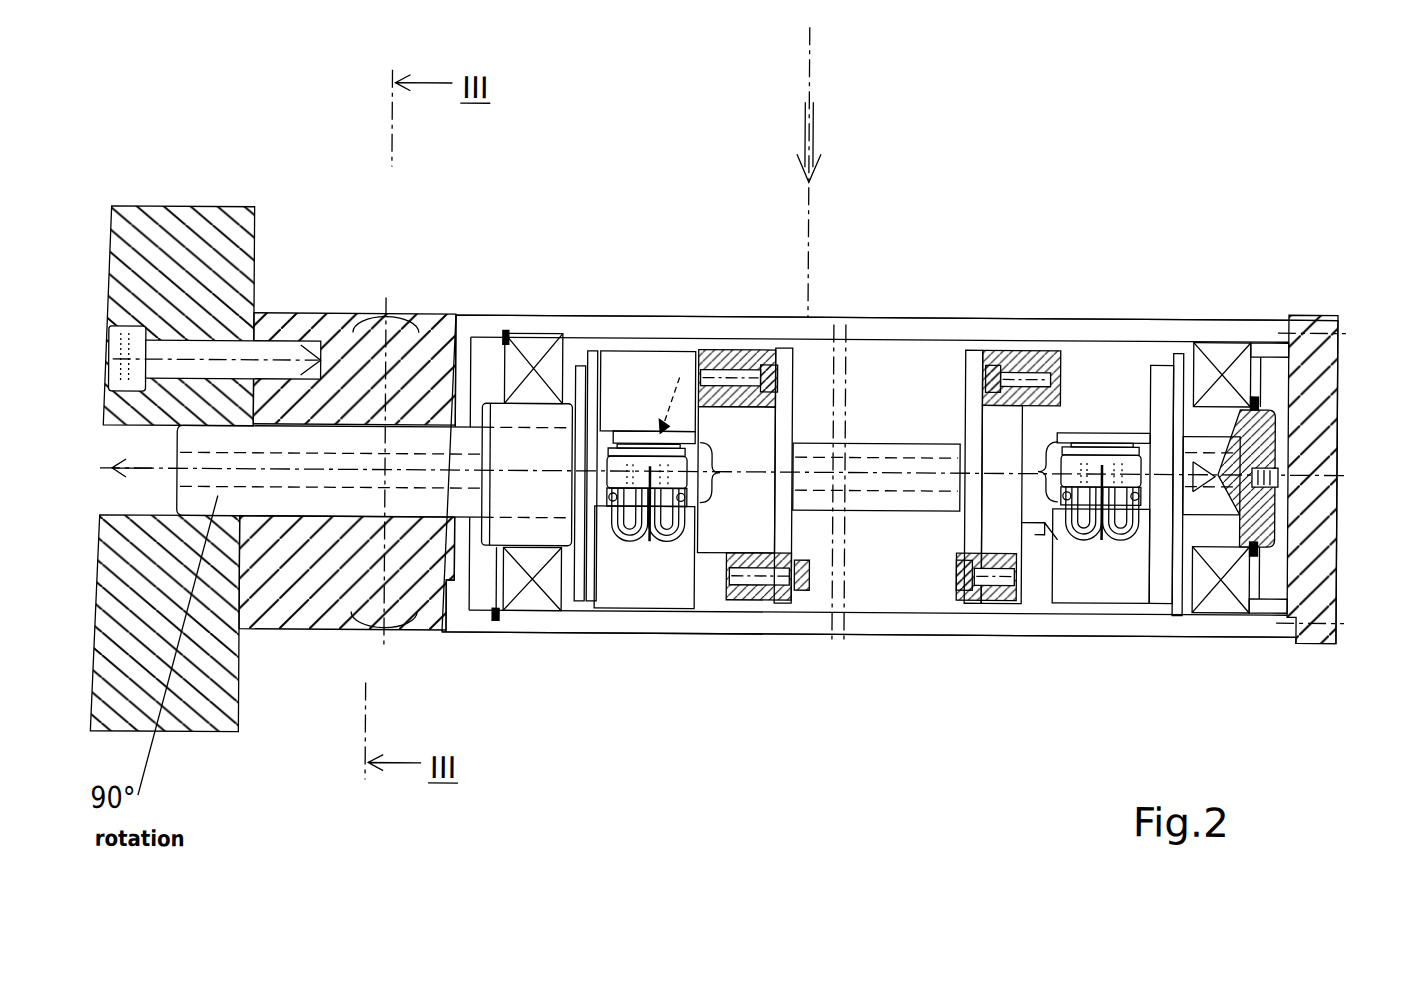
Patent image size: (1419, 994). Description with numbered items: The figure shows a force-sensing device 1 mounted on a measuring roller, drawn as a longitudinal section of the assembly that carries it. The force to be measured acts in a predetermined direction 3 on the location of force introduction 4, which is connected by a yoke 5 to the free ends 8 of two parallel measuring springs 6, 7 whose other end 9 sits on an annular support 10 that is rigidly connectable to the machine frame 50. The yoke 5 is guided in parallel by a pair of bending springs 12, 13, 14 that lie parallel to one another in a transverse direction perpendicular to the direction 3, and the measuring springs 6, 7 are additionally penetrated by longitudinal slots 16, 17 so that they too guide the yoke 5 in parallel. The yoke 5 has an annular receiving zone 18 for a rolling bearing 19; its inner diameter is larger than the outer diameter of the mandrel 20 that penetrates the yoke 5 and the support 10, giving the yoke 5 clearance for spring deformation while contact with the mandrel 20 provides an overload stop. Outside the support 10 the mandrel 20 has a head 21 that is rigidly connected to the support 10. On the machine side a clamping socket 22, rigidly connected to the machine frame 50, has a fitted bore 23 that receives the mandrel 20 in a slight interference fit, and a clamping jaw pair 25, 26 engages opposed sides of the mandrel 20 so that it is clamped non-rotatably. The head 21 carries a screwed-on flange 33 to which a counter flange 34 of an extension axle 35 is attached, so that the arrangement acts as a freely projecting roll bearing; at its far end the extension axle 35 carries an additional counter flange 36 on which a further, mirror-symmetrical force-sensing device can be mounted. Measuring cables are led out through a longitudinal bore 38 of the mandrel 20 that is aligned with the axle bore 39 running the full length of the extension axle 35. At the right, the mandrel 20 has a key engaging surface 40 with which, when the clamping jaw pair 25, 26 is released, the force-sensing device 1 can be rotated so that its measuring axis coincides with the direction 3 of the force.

The force-sensing device 1 is at (1052, 215).
The predetermined direction 3 is at (808, 54).
The location of force introduction 4 is at (805, 316).
The yoke 5 is at (580, 362).
The measuring spring 6 is at (879, 472).
The measuring spring 7 is at (676, 387).
The free ends 8 is at (552, 483).
The other end 9 is at (712, 420).
The support 10 is at (707, 565).
The bending spring 12 is at (618, 540).
The bending spring 13 is at (658, 540).
The bending spring 14 is at (633, 447).
The slot 16 is at (663, 455).
The slot 17 is at (640, 540).
The annular receiving zone 18 is at (1222, 413).
The rolling bearing 19 is at (535, 340).
The mandrel 20 is at (253, 500).
The head 21 is at (795, 378).
The clamping socket 22 is at (258, 318).
The fitted bore 23 is at (323, 420).
The clamping jaw 25 is at (413, 315).
The clamping jaw 26 is at (385, 590).
The screwed-on flange 33 is at (805, 590).
The counter flange 34 is at (782, 440).
The extension axle 35 is at (918, 447).
The additional counter flange 36 is at (975, 512).
The longitudinal bore 38 is at (347, 480).
The axle bore 39 is at (887, 479).
The key engaging surface 40 is at (1279, 467).
The machine frame 50 is at (190, 255).